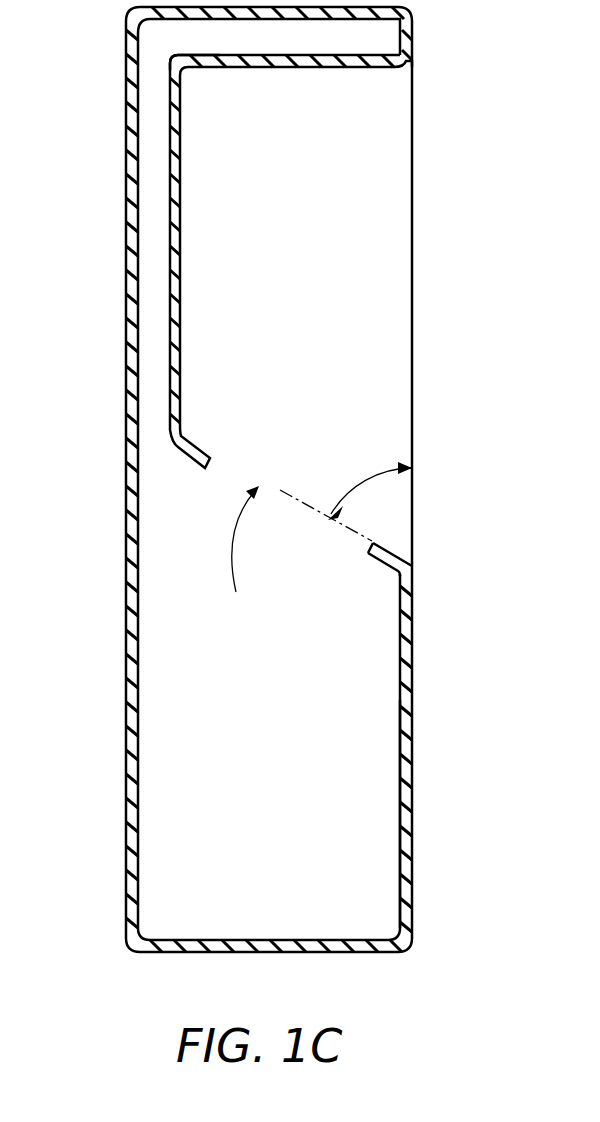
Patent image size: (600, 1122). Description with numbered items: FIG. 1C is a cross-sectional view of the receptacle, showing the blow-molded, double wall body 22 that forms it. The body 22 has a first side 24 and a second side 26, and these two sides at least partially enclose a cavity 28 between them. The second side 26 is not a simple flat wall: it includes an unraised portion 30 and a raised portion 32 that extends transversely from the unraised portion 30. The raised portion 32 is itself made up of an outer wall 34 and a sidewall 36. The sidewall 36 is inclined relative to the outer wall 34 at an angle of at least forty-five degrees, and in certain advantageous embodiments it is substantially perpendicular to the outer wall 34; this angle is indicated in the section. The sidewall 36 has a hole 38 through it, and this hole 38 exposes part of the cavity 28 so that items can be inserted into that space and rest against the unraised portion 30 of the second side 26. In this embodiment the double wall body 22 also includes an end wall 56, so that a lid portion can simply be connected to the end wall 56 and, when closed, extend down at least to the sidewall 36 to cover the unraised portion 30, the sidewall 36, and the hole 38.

The double wall body 22 is at (426, 319).
The first side 24 is at (127, 310).
The second side 26 is at (181, 263).
The cavity 28 is at (150, 418).
The unraised portion 30 is at (181, 156).
The raised portion 32 is at (413, 810).
The outer wall 34 is at (399, 846).
The sidewall 36 is at (374, 562).
The hole 38 is at (235, 558).
The end wall 56 is at (412, 35).